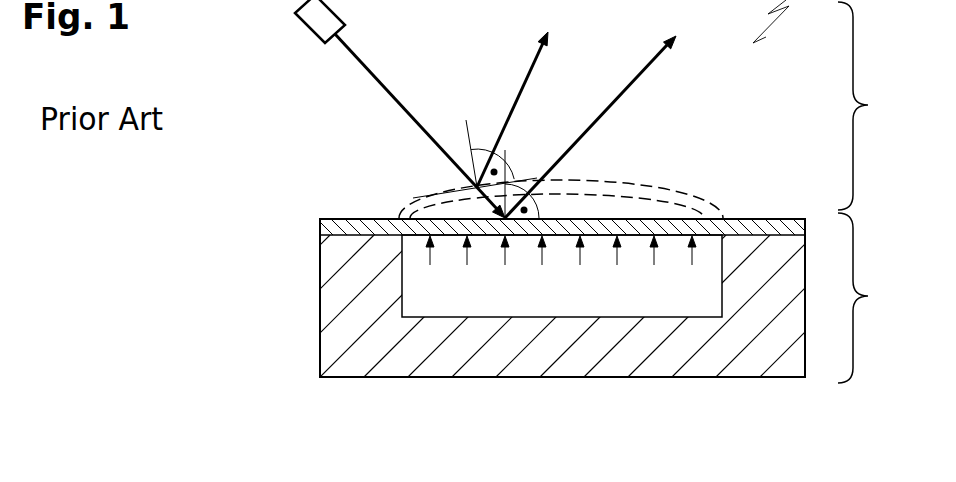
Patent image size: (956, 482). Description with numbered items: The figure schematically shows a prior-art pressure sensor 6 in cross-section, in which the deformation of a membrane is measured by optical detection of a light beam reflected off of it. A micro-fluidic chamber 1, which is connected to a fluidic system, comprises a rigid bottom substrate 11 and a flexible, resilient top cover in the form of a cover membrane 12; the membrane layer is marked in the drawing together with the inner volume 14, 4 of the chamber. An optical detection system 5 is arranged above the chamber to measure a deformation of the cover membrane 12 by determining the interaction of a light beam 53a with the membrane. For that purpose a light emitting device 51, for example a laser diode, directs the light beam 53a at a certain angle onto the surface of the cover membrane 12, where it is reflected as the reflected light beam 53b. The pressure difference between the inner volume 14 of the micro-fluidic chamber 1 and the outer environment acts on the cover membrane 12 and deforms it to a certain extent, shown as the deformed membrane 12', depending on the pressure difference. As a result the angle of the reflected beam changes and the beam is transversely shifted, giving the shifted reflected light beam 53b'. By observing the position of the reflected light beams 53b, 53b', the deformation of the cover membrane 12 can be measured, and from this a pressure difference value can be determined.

The micro-fluidic chamber 1 is at (865, 298).
The membrane 4 is at (563, 242).
The optical detection system 5 is at (864, 106).
The pressure sensor 6 is at (805, 481).
The rigid bottom substrate 11 is at (567, 347).
The cover membrane 12 is at (557, 296).
The deformed cover membrane 12' is at (579, 284).
The inner volume 14 is at (563, 261).
The light emitting device 51 is at (283, 67).
The light beam 53a is at (420, 126).
The reflected light beam 53b is at (590, 119).
The reflected light beam from deformed membrane 53b' is at (519, 98).